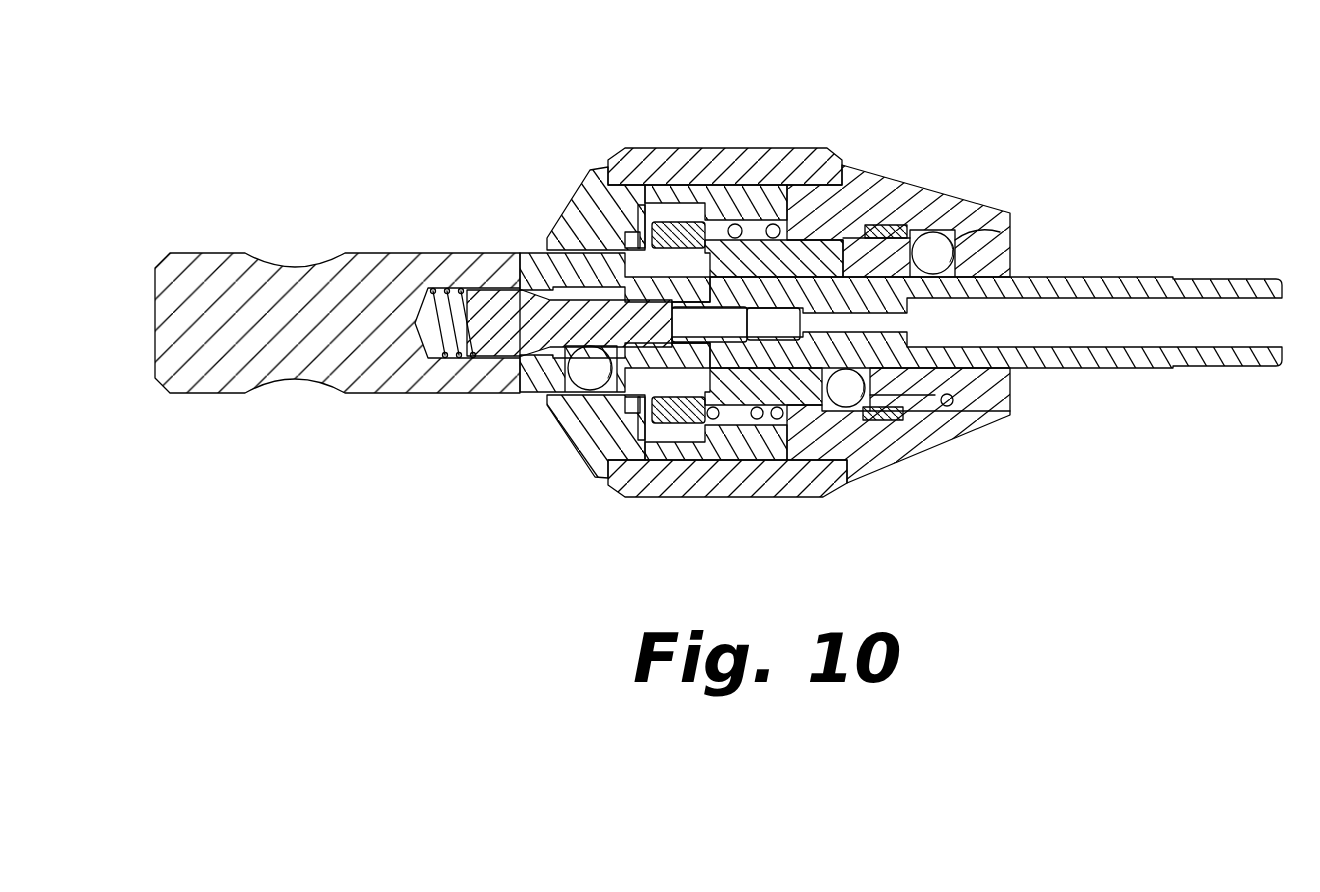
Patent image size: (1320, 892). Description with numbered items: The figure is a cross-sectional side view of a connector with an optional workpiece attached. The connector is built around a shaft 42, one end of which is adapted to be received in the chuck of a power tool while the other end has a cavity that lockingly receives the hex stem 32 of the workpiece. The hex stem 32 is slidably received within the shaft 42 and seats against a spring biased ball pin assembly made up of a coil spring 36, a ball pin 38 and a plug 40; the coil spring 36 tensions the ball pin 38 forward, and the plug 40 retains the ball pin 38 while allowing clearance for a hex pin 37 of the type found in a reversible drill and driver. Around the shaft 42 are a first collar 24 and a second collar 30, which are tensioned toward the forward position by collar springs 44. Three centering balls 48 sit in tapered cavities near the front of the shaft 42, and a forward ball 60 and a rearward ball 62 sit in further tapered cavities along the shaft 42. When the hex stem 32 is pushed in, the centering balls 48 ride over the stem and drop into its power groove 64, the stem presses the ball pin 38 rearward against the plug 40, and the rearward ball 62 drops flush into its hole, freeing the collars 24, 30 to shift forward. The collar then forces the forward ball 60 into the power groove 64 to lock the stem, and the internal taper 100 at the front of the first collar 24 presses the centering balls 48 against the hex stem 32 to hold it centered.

The first collar 24 is at (900, 175).
The second collar 30 is at (563, 447).
The hex stem 32 is at (1025, 277).
The coil spring 36 is at (432, 342).
The hex pin 37 is at (737, 345).
The ball pin 38 is at (548, 296).
The plug 40 is at (620, 252).
The shaft 42 is at (366, 253).
The collar springs 44 is at (708, 215).
The centering balls 48 is at (950, 231).
The forward ball 60 is at (862, 404).
The rearward ball 62 is at (567, 378).
The power groove 64 is at (843, 277).
The internal taper 100 is at (907, 413).